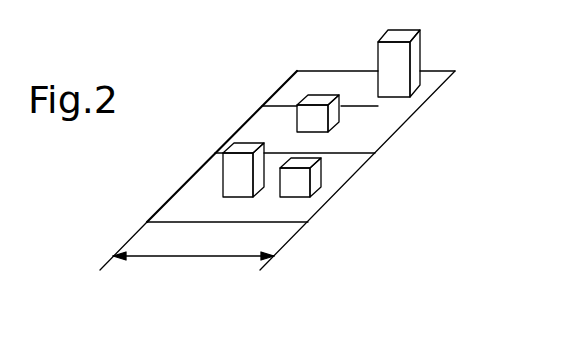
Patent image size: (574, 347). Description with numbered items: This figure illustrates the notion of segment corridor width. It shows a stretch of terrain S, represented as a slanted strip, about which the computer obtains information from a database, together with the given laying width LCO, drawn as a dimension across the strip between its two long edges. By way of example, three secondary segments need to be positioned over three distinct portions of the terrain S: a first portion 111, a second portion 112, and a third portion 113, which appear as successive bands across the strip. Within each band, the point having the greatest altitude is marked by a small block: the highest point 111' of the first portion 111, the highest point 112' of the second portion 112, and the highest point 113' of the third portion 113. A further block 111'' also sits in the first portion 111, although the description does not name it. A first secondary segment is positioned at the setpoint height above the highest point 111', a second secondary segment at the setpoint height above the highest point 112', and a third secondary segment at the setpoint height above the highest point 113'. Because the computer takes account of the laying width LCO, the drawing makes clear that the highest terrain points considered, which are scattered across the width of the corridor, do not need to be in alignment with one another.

The first portion 111 is at (277, 224).
The highest point of the first portion 111' is at (223, 145).
The second structure of first row 111'' is at (351, 177).
The second portion 112 is at (345, 146).
The highest point of the second portion 112' is at (312, 89).
The third portion 113 is at (385, 57).
The highest point of the third portion 113' is at (360, 55).
The terrain S is at (287, 223).
The laying width LCO is at (193, 273).